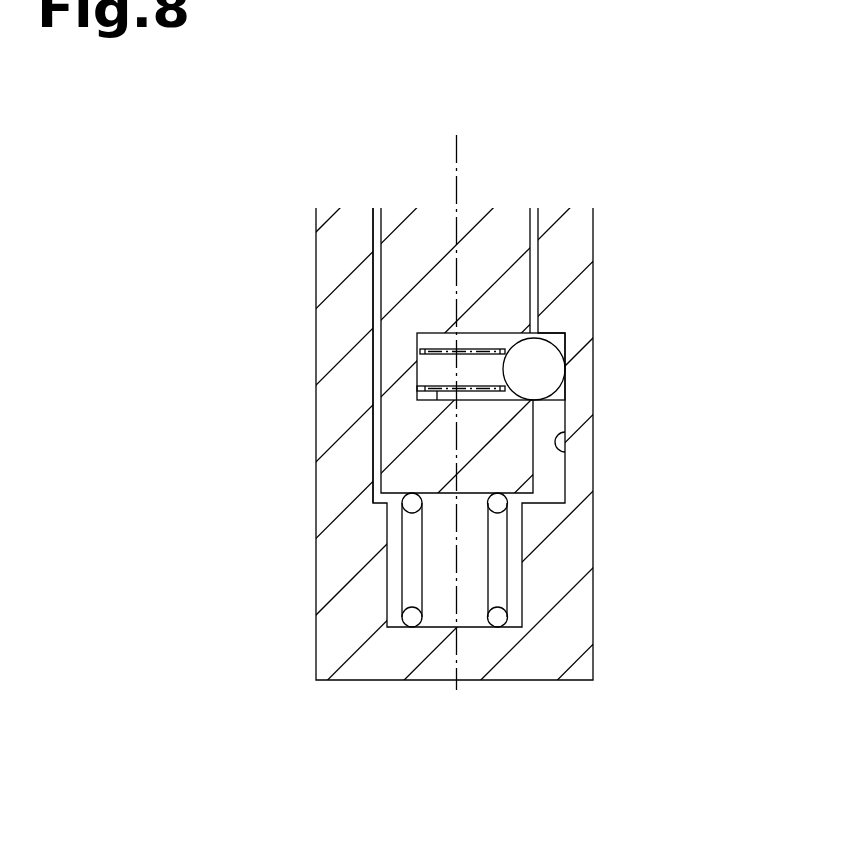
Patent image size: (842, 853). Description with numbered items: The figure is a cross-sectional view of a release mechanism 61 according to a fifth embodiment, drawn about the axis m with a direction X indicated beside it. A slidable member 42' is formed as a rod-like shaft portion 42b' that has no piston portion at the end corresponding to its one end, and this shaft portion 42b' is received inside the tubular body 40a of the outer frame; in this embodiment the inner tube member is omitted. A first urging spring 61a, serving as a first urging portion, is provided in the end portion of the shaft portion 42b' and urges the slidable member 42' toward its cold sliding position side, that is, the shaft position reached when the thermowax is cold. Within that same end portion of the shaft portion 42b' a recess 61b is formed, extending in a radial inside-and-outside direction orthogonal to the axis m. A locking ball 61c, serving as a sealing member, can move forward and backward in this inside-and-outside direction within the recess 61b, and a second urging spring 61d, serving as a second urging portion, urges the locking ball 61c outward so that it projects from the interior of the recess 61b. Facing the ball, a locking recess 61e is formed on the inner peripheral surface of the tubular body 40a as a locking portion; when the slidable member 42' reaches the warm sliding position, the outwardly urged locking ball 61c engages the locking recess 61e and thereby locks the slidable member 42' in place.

The tubular body 40a is at (594, 487).
The slidable member 42' is at (421, 435).
The shaft portion 42b' is at (316, 355).
The release mechanism 61 is at (556, 506).
The first urging spring 61a is at (507, 595).
The recess 61b is at (433, 381).
The locking ball 61c is at (556, 368).
The second urging spring 61d is at (490, 350).
The locking recess 61e is at (563, 442).
The axis m is at (456, 157).
The direction X is at (715, 215).